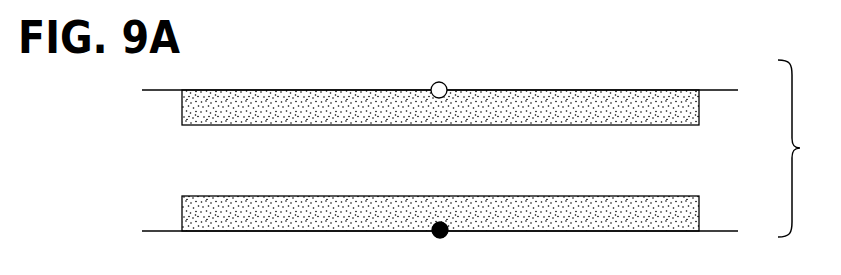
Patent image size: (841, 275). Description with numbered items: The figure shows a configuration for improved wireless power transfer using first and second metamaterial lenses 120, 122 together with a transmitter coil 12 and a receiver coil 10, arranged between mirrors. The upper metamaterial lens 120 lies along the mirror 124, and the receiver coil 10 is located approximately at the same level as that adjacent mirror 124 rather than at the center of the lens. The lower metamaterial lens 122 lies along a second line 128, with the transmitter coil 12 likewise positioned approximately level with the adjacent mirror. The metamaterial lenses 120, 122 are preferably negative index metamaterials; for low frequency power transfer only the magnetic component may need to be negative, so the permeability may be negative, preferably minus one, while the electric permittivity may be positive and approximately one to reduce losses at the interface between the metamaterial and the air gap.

The receiver coil 10 is at (440, 82).
The transmitter coil 12 is at (440, 238).
The metamaterial lens 120 is at (190, 107).
The metamaterial lens 122 is at (190, 214).
The mirror 124 is at (165, 90).
The lower electrode line 128 is at (158, 232).